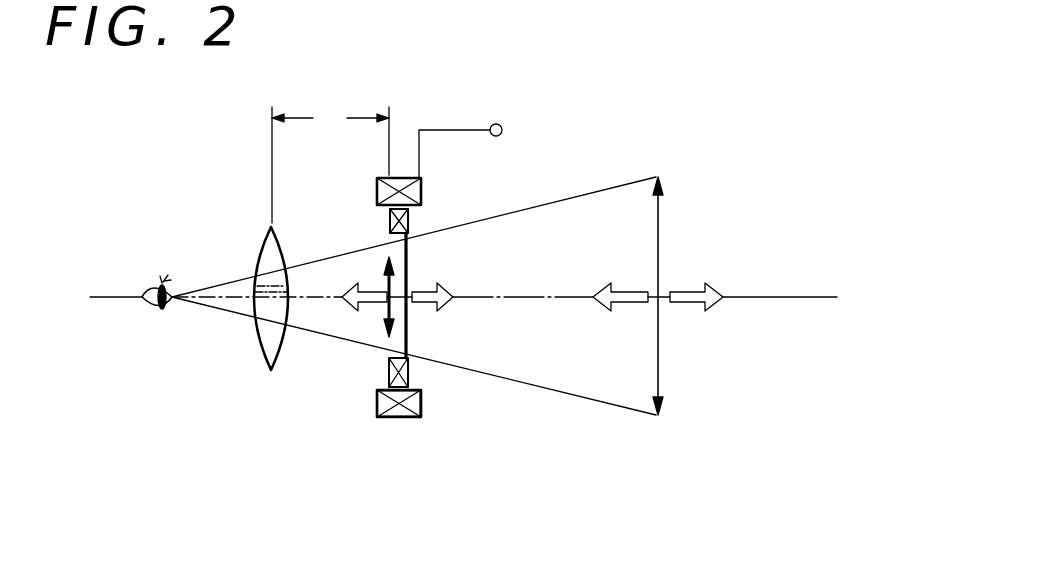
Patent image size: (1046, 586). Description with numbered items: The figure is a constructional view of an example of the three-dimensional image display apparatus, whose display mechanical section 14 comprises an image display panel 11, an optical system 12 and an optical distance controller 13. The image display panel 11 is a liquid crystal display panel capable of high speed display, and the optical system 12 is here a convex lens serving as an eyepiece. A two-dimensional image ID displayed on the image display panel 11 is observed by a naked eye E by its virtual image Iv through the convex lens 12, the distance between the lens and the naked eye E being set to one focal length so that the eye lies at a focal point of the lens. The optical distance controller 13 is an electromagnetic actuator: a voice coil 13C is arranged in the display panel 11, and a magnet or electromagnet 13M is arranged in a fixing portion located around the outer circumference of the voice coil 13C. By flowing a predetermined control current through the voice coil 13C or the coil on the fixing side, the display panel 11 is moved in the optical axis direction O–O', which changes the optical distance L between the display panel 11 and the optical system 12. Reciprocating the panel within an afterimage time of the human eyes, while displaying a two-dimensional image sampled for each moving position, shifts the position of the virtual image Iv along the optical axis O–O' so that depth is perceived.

The image display panel 11 is at (402, 263).
The optical system 12 is at (258, 342).
The optical distance controller 13 is at (393, 418).
The voice coil 13C is at (389, 372).
The magnet or electromagnet 13M is at (420, 404).
The display mechanical section 14 is at (240, 502).
The naked eye E is at (143, 282).
The two-dimensional image ID is at (407, 305).
The virtual image Iv is at (660, 232).
The optical distance L is at (330, 165).
The optical axis end point O is at (77, 299).
The optical axis end point O' is at (855, 299).